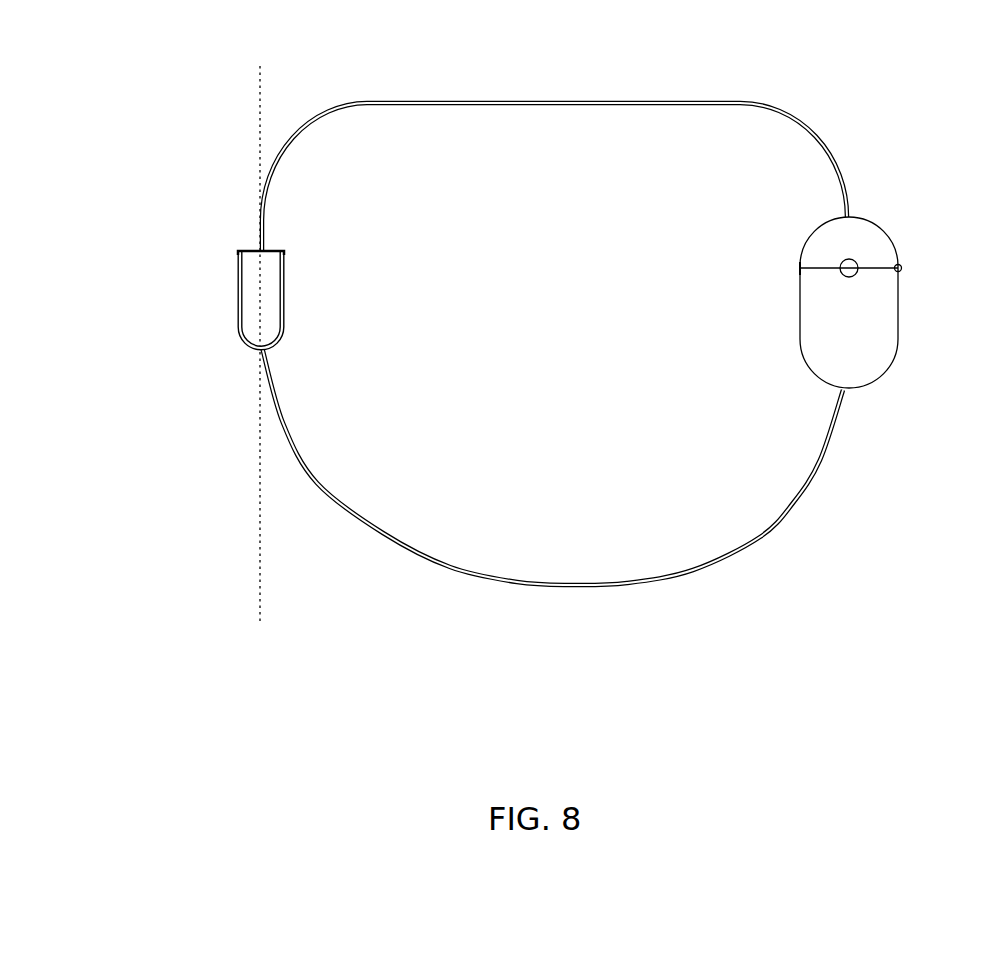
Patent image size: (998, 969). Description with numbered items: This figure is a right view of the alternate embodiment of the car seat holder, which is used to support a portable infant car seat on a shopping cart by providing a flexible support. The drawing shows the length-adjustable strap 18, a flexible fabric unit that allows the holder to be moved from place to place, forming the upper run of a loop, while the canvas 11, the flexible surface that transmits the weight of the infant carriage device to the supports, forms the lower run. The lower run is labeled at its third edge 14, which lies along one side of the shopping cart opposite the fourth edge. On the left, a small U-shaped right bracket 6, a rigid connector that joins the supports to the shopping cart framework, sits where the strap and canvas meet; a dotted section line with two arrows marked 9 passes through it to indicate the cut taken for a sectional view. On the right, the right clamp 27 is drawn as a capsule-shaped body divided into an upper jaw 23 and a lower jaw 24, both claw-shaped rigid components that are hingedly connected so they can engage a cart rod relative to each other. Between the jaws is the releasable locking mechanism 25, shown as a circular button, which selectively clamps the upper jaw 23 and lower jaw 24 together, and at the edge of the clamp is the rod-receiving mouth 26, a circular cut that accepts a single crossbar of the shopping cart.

The right bracket 6 is at (251, 288).
The section line 9- 9 is at (188, 65).
The canvas 11 is at (403, 486).
The third edge 14 is at (820, 463).
The length-adjustable strap 18 is at (556, 66).
The upper jaw 23 is at (866, 228).
The lower jaw 24 is at (883, 348).
The releasable locking mechanism 25 is at (798, 268).
The rod-receiving mouth 26 is at (899, 272).
The right clamp 27 is at (942, 234).